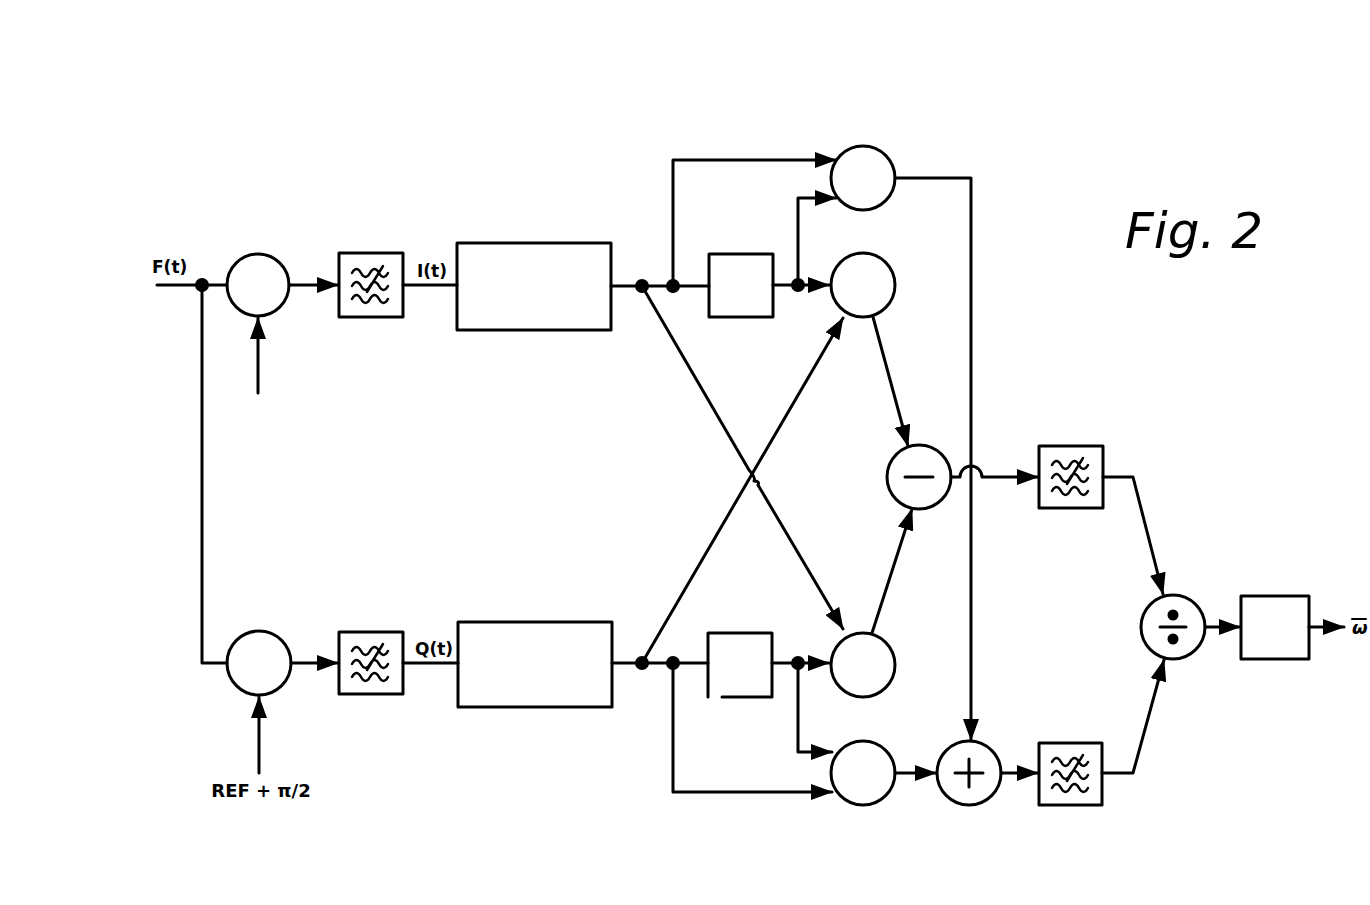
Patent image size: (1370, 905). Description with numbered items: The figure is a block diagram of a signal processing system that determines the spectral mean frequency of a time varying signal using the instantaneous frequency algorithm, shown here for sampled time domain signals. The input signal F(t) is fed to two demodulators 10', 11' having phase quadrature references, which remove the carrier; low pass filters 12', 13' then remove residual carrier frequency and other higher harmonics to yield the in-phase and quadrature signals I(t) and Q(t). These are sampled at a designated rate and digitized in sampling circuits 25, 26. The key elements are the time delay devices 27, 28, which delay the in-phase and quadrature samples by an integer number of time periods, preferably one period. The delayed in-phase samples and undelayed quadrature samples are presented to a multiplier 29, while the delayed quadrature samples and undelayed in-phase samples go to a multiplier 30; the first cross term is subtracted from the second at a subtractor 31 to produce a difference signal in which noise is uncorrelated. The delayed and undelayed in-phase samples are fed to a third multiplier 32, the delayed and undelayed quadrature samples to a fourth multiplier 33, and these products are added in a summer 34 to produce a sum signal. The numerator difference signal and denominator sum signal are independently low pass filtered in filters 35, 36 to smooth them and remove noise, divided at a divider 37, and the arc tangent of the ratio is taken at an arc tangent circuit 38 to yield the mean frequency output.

The demodulator 10' is at (258, 302).
The demodulator 11' is at (259, 681).
The low pass filter 12' is at (369, 261).
The low pass filter 13' is at (370, 641).
The sampling circuit 25 is at (500, 249).
The sampling circuit 26 is at (500, 624).
The time delay device 27 is at (739, 257).
The time delay device 28 is at (741, 697).
The multiplier 29 is at (878, 267).
The multiplier 30 is at (884, 689).
The subtractor 31 is at (929, 449).
The third multiplier 32 is at (880, 152).
The fourth multiplier 33 is at (877, 800).
The summer 34 is at (981, 803).
The low pass filter 35 is at (1083, 446).
The low pass filter 36 is at (1082, 806).
The divider 37 is at (1188, 599).
The arc tangent circuit 38 is at (1281, 596).